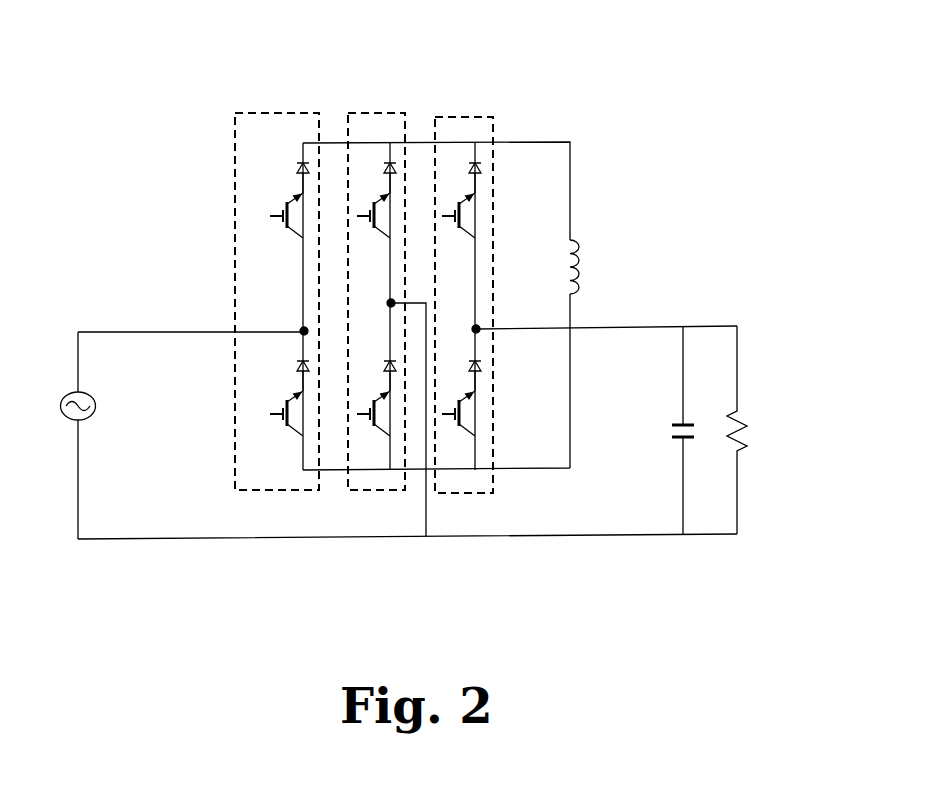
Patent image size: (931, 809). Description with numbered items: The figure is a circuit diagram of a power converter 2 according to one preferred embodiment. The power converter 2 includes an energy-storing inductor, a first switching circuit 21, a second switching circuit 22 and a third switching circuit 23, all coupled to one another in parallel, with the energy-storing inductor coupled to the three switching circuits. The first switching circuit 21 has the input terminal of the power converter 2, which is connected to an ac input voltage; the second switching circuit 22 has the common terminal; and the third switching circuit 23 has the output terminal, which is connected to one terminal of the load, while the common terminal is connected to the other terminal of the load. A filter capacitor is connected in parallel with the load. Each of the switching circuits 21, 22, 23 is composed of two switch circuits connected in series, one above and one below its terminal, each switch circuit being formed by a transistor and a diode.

The power converter 2 is at (818, 509).
The first switching circuit 21 is at (267, 112).
The second switching circuit 22 is at (362, 112).
The third switching circuit 23 is at (473, 117).